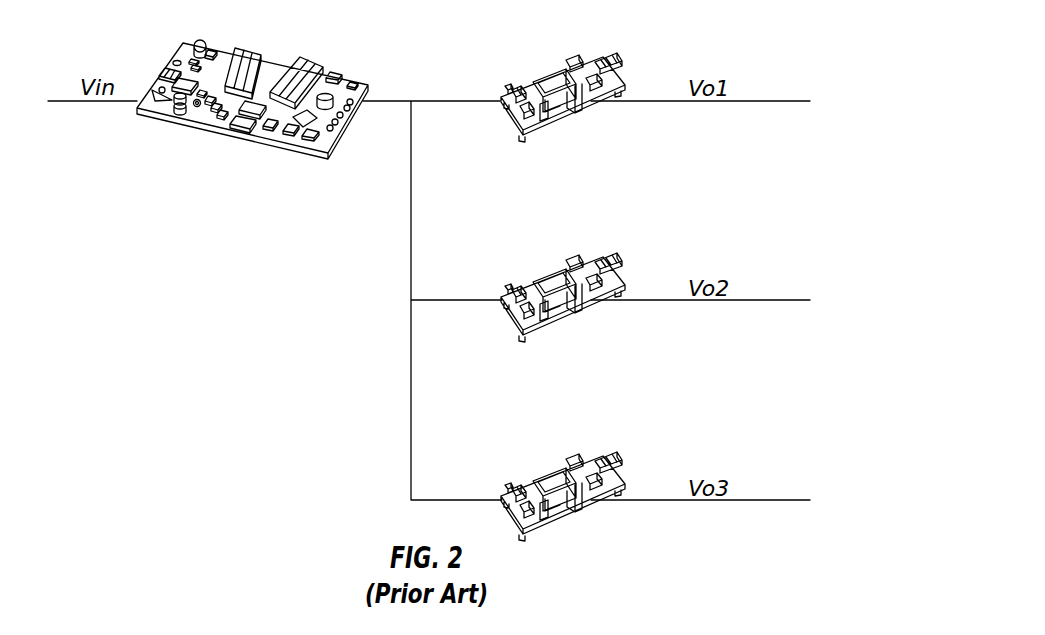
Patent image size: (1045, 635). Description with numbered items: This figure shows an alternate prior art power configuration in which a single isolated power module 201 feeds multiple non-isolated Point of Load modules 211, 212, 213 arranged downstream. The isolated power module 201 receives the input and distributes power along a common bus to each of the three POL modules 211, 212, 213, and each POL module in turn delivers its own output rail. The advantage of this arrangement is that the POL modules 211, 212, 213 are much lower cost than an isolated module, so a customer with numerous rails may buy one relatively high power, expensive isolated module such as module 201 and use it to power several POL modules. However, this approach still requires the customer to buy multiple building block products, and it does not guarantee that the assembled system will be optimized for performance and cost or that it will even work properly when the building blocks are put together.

The isolated power module 201 is at (220, 135).
The non-isolated Point of Load (POL) module 211 is at (573, 112).
The non-isolated Point of Load (POL) module 212 is at (570, 301).
The non-isolated Point of Load (POL) module 213 is at (570, 500).